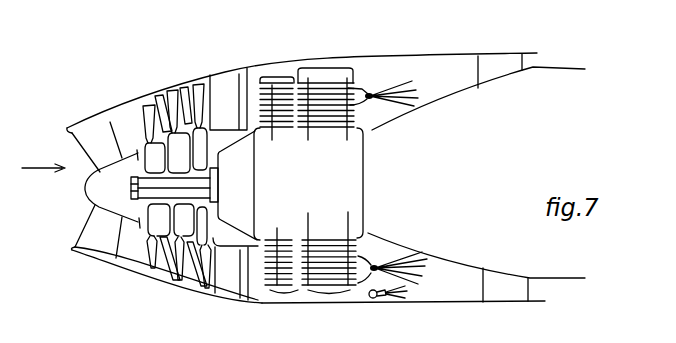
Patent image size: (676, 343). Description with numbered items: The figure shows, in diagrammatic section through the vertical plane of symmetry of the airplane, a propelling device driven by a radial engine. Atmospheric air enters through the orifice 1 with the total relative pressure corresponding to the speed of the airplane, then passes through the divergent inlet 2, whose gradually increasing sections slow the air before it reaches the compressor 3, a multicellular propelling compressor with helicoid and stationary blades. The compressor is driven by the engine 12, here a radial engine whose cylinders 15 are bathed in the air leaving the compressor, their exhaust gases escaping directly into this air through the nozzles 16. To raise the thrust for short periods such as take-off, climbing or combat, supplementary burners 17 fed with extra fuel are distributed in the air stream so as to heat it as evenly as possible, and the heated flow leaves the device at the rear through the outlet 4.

The orifice 1 is at (72, 206).
The divergent inlet 2 is at (130, 128).
The compressor 3 is at (172, 113).
The exhaust nozzle 4 is at (535, 62).
The engine 12 is at (290, 184).
The cylinders 15 is at (325, 103).
The nozzles 16 is at (366, 93).
The burners 17 is at (378, 298).